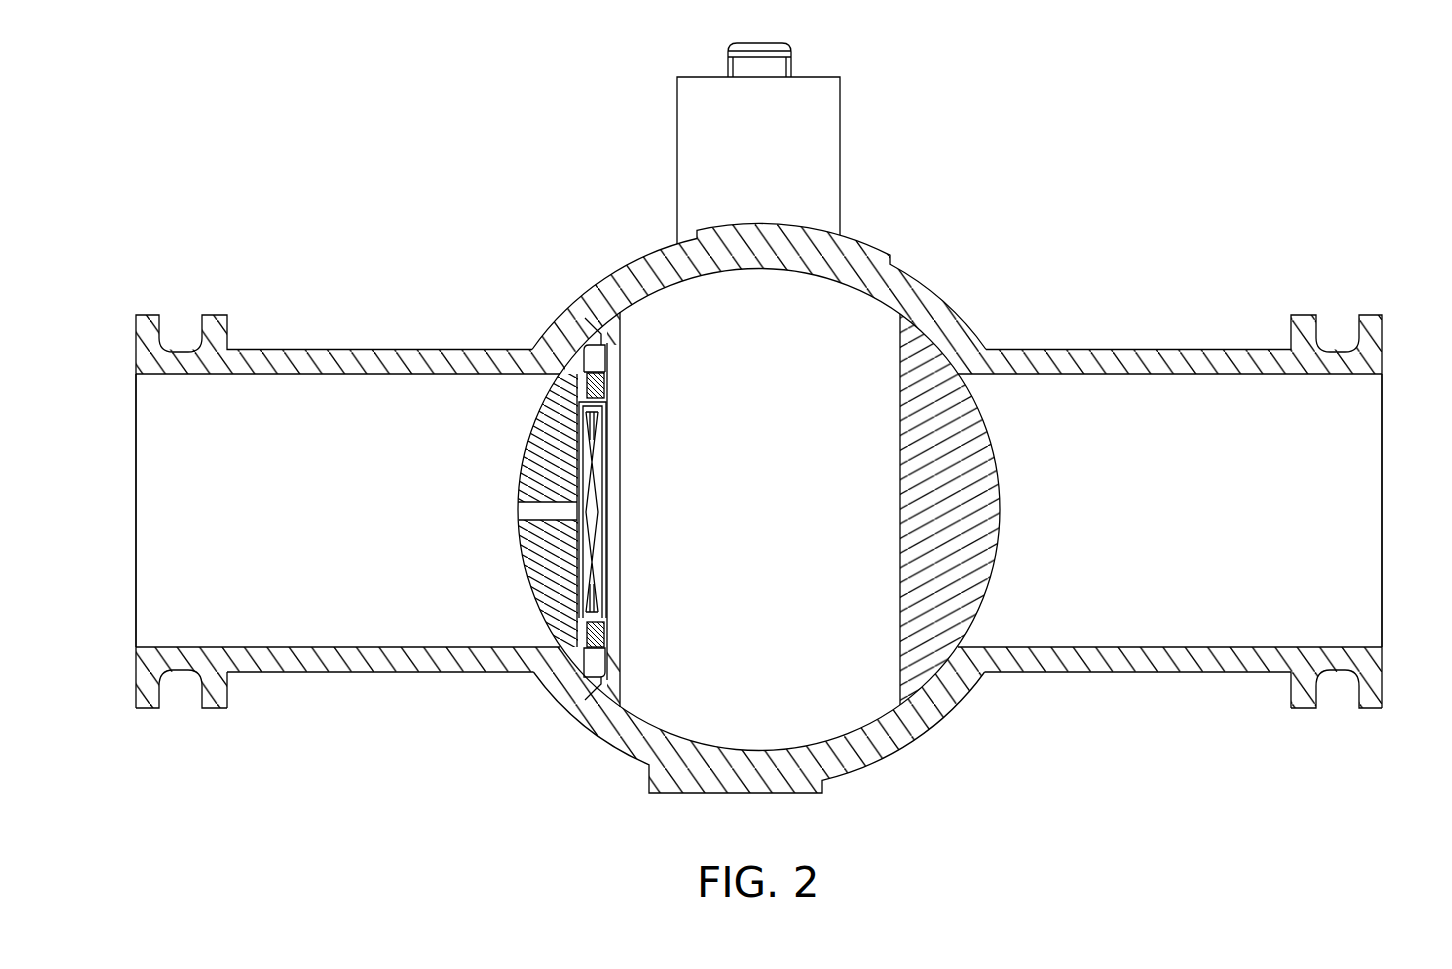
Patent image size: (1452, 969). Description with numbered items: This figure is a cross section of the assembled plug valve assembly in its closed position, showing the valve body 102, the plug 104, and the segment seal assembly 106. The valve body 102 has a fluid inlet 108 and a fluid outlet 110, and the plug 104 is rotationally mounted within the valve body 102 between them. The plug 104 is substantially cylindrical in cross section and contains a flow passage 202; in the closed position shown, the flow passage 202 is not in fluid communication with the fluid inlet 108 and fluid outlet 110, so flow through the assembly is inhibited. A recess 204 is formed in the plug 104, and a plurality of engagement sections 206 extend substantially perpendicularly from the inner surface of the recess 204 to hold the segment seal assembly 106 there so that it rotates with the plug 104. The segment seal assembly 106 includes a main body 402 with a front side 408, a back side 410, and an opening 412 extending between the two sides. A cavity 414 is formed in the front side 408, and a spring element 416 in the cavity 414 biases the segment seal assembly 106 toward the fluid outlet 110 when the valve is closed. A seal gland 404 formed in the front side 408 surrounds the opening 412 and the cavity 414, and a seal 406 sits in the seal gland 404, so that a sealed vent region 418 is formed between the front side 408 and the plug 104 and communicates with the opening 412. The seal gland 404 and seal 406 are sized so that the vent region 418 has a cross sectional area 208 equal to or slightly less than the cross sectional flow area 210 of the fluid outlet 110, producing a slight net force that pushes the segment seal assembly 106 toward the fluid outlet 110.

The valve body 102 is at (726, 484).
The plug 104 is at (942, 340).
The segment seal assembly 106 is at (543, 513).
The fluid inlet 108 is at (1372, 512).
The fluid outlet 110 is at (148, 512).
The flow passage 202 is at (852, 342).
The recess 204 is at (609, 350).
The engagement sections 206 is at (601, 340).
The cross sectional area 208 is at (727, 405).
The cross sectional flow area 210 is at (352, 380).
The main body 402 is at (556, 412).
The seal gland 404 is at (606, 388).
The seal 406 is at (606, 640).
The front side 408 is at (606, 672).
The back side 410 is at (526, 470).
The opening 412 is at (530, 512).
The cavity 414 is at (606, 511).
The spring element 416 is at (606, 553).
The sealed vent region 418 is at (600, 437).